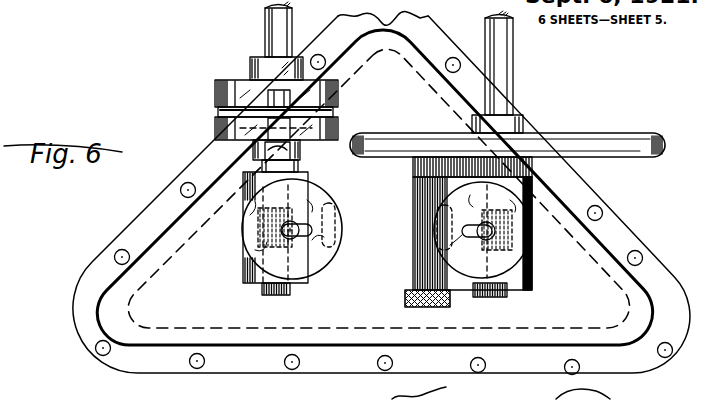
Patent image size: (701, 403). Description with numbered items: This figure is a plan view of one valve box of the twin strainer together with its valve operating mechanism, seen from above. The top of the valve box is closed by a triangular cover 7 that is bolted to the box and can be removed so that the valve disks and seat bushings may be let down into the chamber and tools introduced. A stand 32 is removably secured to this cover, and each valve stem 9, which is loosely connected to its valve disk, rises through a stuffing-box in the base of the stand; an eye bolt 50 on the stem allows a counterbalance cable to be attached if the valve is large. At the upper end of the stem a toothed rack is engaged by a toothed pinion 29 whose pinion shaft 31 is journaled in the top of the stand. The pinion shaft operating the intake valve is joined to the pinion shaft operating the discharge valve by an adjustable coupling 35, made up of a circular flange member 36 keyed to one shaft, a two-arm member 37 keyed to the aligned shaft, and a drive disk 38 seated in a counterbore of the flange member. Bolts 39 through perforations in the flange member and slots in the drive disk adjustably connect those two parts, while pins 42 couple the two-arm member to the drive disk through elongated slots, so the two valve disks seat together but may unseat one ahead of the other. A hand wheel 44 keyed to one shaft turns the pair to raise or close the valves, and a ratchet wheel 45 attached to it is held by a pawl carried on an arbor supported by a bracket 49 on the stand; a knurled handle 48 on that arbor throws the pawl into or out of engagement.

The triangular cover 7 is at (381, 195).
The valve stem 9 is at (386, 230).
The toothed pinion 29 is at (255, 238).
The pinion shaft 31 is at (265, 25).
The stand 32 is at (249, 280).
The adjustable coupling 35 is at (215, 93).
The circular flange member 36 is at (215, 130).
The two-arm member 37 is at (215, 81).
The drive disk 38 is at (218, 113).
The bolts 39 is at (253, 151).
The pins 42 is at (232, 79).
The hand wheel 44 is at (588, 136).
The ratchet wheel 45 is at (540, 169).
The knurled handle 48 is at (405, 303).
The bracket 49 is at (413, 206).
The eye bolt 50 is at (301, 223).